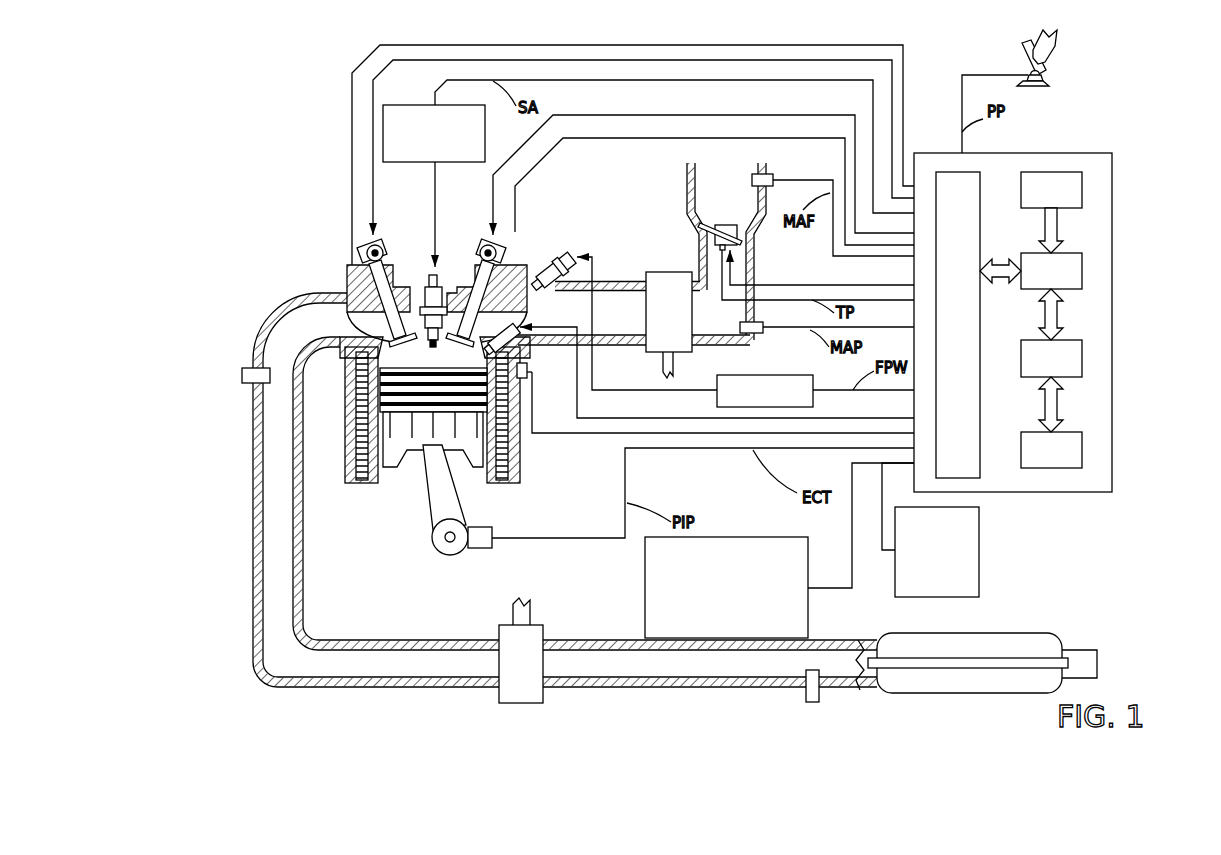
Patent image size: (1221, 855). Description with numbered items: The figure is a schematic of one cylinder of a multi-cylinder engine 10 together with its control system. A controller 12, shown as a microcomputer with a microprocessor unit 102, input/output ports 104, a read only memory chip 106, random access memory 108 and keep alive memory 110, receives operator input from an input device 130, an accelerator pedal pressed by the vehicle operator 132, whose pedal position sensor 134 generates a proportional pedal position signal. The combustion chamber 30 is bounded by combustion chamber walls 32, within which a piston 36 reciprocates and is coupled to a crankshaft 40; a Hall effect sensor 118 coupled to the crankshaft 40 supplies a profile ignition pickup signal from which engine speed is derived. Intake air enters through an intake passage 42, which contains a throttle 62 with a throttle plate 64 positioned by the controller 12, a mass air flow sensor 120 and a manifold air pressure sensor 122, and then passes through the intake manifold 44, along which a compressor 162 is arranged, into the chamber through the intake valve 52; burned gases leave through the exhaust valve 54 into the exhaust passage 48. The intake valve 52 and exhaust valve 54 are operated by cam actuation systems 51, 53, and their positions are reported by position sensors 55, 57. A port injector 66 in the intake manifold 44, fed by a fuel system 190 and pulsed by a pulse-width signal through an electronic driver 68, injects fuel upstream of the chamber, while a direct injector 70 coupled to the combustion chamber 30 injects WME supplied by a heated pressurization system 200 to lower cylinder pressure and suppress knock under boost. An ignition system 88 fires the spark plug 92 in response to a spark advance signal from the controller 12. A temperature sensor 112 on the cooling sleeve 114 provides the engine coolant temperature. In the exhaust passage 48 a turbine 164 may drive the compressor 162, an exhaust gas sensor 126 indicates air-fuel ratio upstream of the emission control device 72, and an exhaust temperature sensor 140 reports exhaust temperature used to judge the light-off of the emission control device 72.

The engine 10 is at (288, 226).
The controller 12 is at (1050, 310).
The combustion chamber 30 is at (432, 353).
The combustion chamber walls 32 is at (373, 487).
The piston 36 is at (433, 447).
The crankshaft 40 is at (443, 555).
The intake passage 42 is at (733, 203).
The intake manifold 44 is at (623, 320).
The exhaust passage 48 is at (325, 330).
The cam actuation system 51 is at (481, 240).
The intake valve 52 is at (499, 312).
The cam actuation system 53 is at (384, 240).
The exhaust valve 54 is at (350, 291).
The position sensor 55 is at (505, 260).
The position sensor 57 is at (363, 253).
The throttle 62 is at (745, 234).
The throttle plate 64 is at (702, 230).
The injector 66 is at (553, 260).
The electronic driver 68 is at (805, 399).
The injector 70 is at (524, 340).
The emission control device 72 is at (1020, 633).
The ignition system 88 is at (394, 105).
The spark plug 92 is at (434, 265).
The microprocessor unit 102 is at (1083, 266).
The input/output ports 104 is at (980, 177).
The read only memory chip 106 is at (1083, 187).
The random access memory 108 is at (1083, 357).
The keep alive memory 110 is at (1083, 448).
The temperature sensor 112 is at (529, 375).
The cooling sleeve 114 is at (364, 405).
The Hall effect sensor 118 is at (487, 548).
The mass air flow sensor 120 is at (773, 174).
The manifold air pressure sensor 122 is at (765, 334).
The exhaust gas sensor 126 is at (242, 376).
The input device 130 is at (1015, 52).
The vehicle operator 132 is at (1057, 43).
The pedal position sensor 134 is at (1047, 80).
The exhaust temperature sensor 140 is at (812, 702).
The compressor 162 is at (688, 320).
The turbine 164 is at (536, 676).
The fuel system 190 is at (923, 587).
The heated pressurization system 200 is at (727, 537).